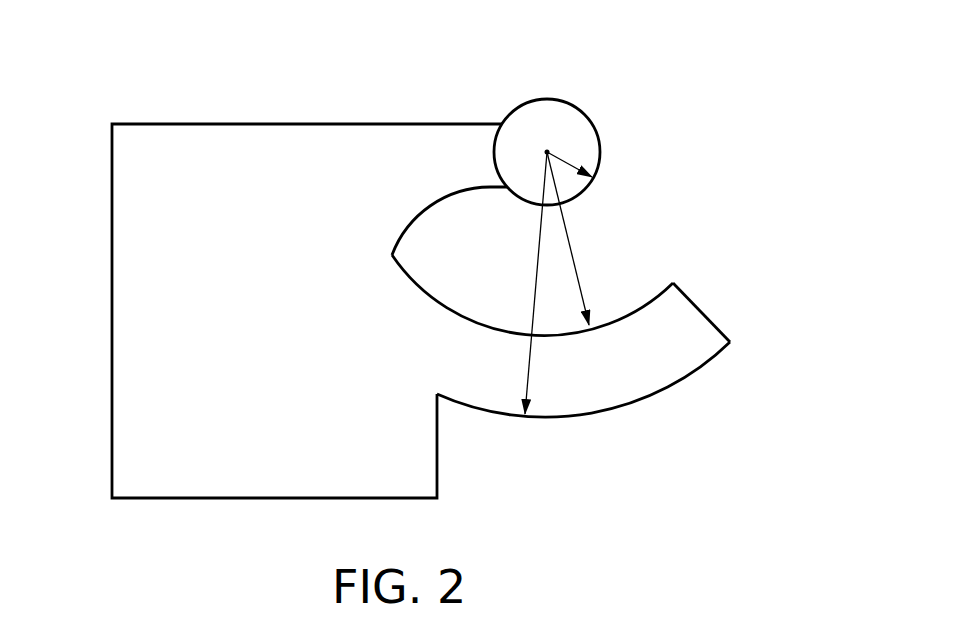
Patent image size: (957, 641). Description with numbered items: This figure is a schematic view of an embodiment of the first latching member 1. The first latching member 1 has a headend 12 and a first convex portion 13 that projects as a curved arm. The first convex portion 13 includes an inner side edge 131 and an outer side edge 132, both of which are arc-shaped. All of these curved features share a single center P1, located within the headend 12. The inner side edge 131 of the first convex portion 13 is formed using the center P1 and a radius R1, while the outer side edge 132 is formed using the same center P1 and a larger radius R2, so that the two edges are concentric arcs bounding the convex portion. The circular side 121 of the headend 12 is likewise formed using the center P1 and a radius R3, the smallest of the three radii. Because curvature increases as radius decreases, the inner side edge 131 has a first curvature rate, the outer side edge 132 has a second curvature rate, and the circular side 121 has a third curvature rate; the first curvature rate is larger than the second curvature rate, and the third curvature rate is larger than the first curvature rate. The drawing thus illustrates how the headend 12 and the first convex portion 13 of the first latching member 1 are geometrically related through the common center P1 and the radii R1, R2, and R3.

The first latching member 1 is at (62, 52).
The headend 12 is at (530, 118).
The circular side 121 is at (585, 108).
The first convex portion 13 is at (688, 318).
The inner side edge 131 is at (643, 294).
The outer side edge 132 is at (680, 384).
The center P1 is at (528, 154).
The radius R1 is at (575, 238).
The radius R2 is at (543, 283).
The radius R3 is at (569, 156).